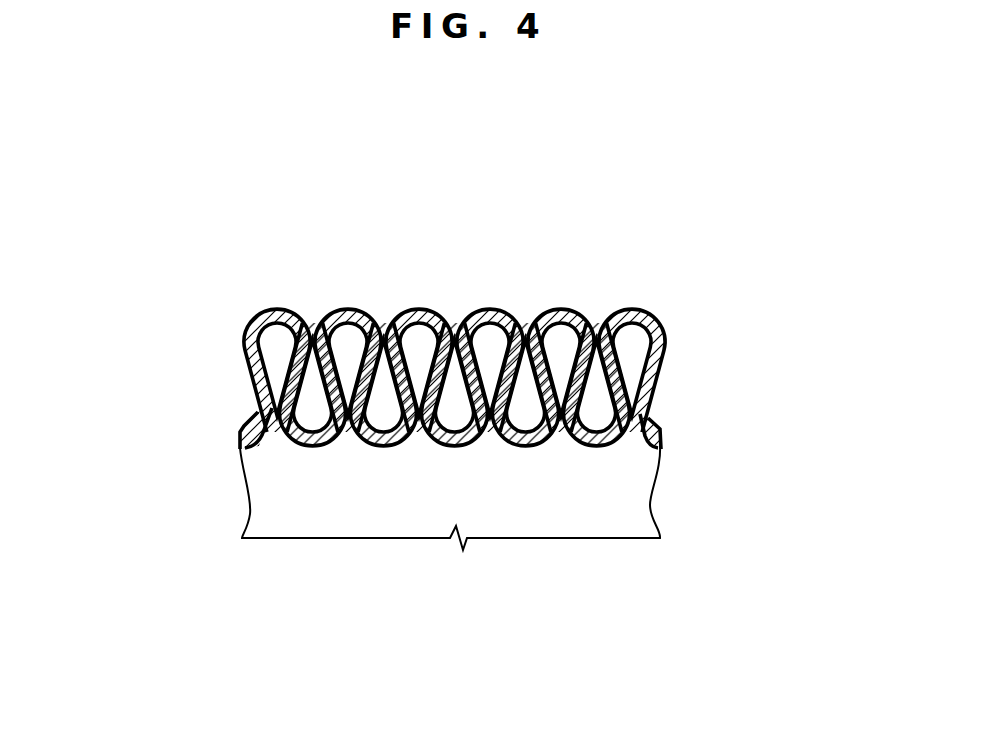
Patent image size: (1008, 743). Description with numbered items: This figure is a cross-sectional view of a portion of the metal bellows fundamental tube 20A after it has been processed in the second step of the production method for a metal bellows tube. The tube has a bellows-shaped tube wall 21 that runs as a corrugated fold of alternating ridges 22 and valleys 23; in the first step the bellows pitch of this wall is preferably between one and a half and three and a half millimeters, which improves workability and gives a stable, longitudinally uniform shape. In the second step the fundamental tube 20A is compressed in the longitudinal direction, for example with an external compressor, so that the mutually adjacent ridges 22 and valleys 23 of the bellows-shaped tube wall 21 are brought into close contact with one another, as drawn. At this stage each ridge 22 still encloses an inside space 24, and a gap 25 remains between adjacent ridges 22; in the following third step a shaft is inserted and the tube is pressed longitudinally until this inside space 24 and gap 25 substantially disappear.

The metal bellows fundamental tube 20A is at (697, 180).
The bellows-shaped tube wall 21 is at (663, 373).
The ridges 22 is at (367, 295).
The valleys 23 is at (361, 474).
The inside space 24 is at (270, 337).
The gap 25 is at (305, 417).